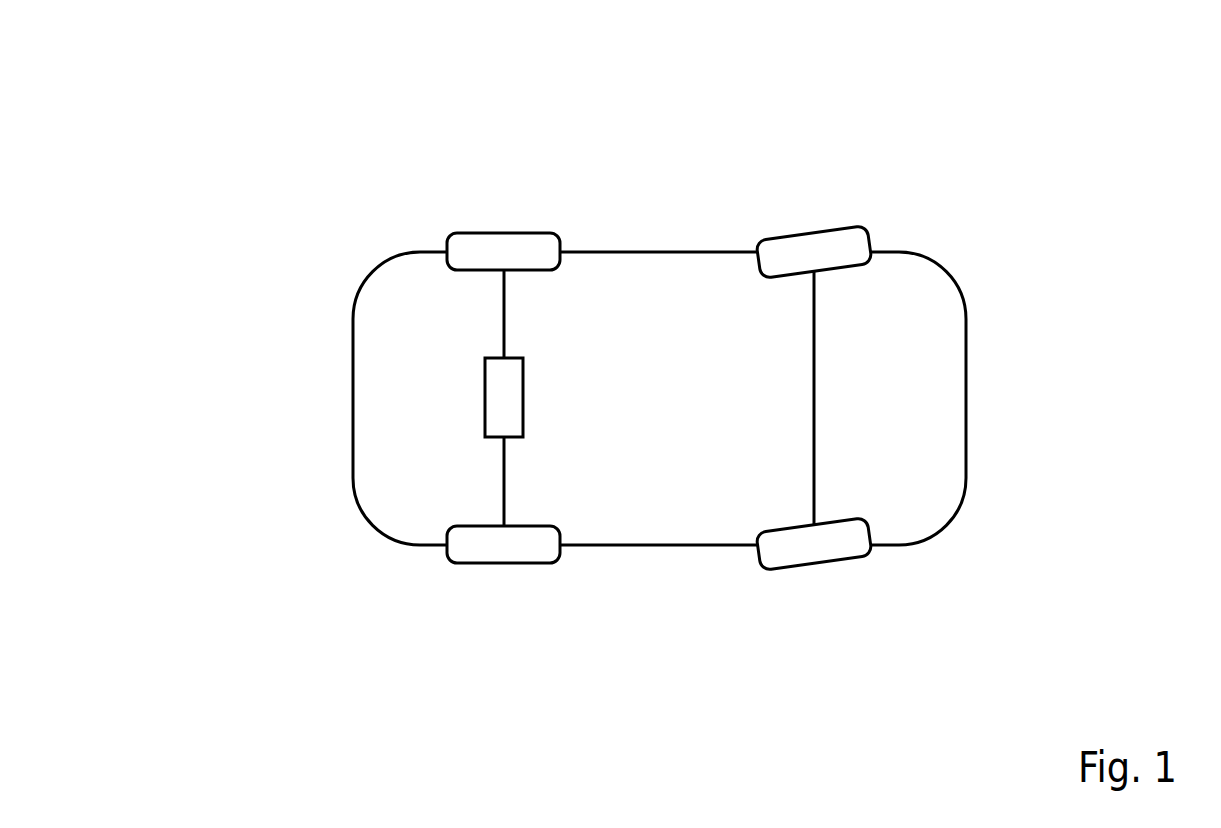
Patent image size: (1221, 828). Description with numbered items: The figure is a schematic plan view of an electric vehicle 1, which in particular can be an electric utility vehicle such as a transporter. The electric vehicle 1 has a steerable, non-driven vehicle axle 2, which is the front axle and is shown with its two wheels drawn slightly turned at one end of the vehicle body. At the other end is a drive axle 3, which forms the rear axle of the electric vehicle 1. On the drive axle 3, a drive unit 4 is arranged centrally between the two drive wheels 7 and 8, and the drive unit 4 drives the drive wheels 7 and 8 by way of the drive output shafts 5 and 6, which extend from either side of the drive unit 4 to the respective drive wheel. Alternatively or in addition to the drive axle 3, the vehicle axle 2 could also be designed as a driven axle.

The electric vehicle 1 is at (383, 176).
The vehicle axle 2 is at (829, 214).
The drive axle 3 is at (481, 579).
The drive unit 4 is at (502, 390).
The drive output shaft 5 is at (504, 313).
The drive output shaft 6 is at (504, 478).
The drive wheel 7 is at (490, 250).
The drive wheel 8 is at (533, 542).